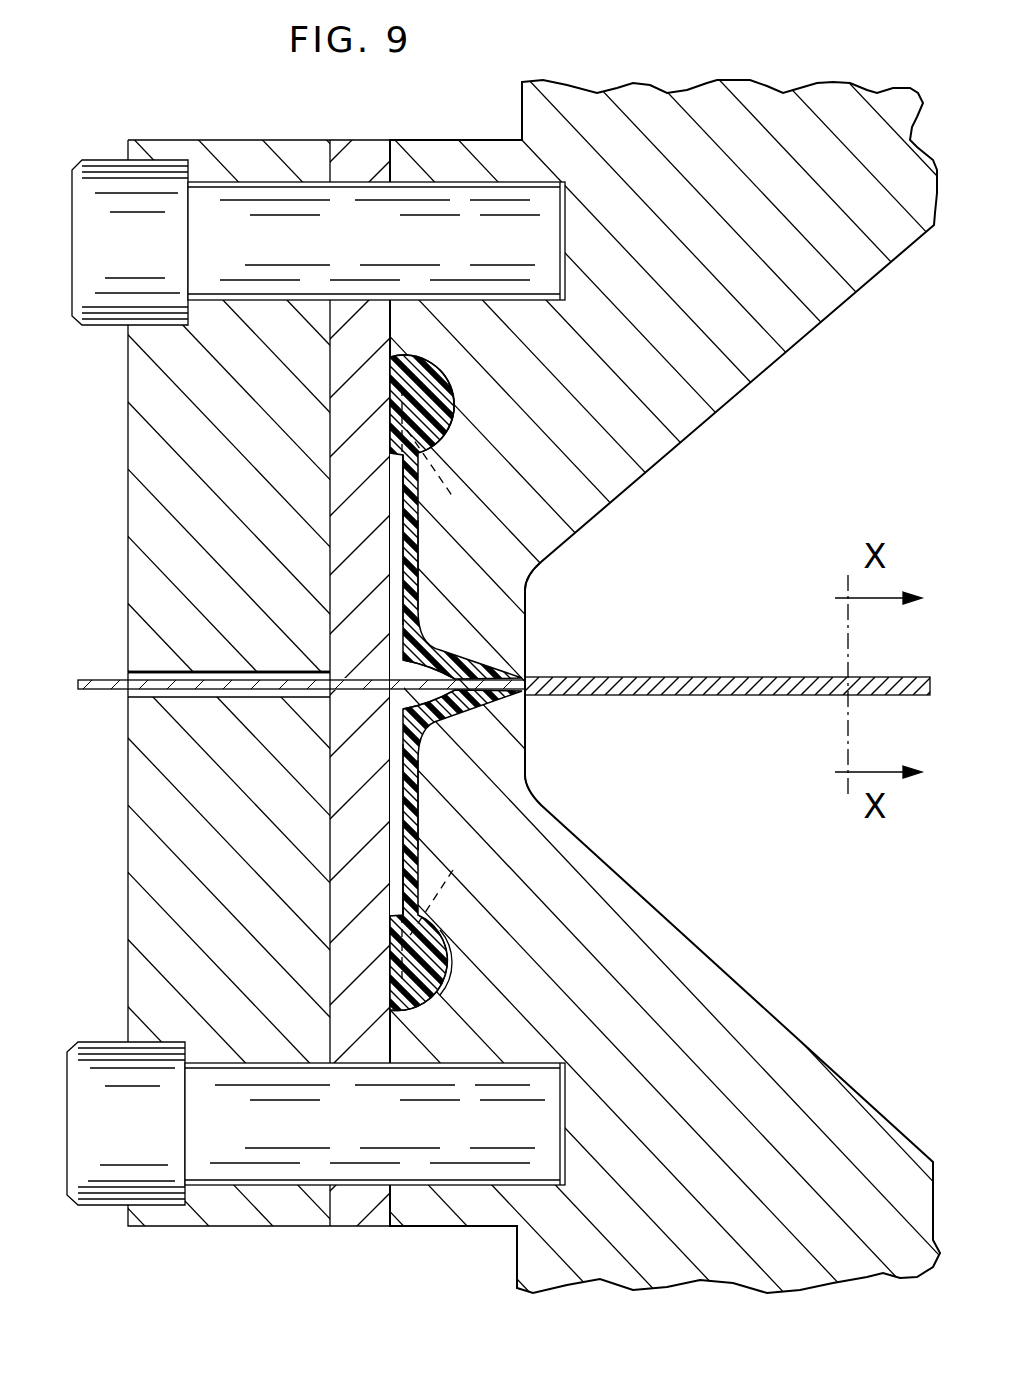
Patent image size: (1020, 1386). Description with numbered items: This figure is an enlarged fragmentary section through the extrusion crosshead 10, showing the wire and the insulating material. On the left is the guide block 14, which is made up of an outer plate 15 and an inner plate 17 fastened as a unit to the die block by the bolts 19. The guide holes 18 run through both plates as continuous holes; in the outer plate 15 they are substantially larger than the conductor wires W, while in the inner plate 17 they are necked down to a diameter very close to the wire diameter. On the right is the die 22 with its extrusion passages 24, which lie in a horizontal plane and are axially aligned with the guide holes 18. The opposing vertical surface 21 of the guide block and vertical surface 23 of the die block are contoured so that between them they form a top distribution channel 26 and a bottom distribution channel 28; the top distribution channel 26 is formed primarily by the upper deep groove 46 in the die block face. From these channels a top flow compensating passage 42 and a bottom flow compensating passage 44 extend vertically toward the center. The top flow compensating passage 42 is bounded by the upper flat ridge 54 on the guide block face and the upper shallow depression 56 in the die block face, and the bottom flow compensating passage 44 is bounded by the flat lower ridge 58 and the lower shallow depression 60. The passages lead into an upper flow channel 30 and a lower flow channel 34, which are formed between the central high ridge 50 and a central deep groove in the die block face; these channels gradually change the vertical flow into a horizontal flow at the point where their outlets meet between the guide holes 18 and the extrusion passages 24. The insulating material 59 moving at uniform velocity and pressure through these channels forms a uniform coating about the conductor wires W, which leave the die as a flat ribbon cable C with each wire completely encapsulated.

The extrusion crosshead 10 is at (172, 115).
The guide block 14 is at (510, 693).
The outer plate 15 is at (140, 525).
The inner plate 17 is at (356, 165).
The guide holes 18 is at (130, 676).
The bolts 19 is at (112, 180).
The vertical surface of guide block 21 is at (395, 175).
The die 22 is at (525, 655).
The vertical surface of die block 23 is at (390, 165).
The extrusion passages 24 is at (520, 700).
The top distribution channel 26 is at (445, 418).
The bottom distribution channel 28 is at (435, 970).
The upper flow channel 30 is at (510, 693).
The lower flow channel 34 is at (405, 722).
The top flow compensating passage 42 is at (405, 552).
The bottom flow compensating passage 44 is at (405, 832).
The upper deep groove 46 is at (440, 455).
The central high ridge 50 is at (440, 700).
The upper flat ridge 54 is at (420, 530).
The upper shallow depression 56 is at (415, 490).
The flat lower ridge 58 is at (410, 805).
The insulating material 59 is at (410, 592).
The lower shallow depression 60 is at (410, 880).
The conductor wires W is at (504, 680).
The flat ribbon cable C is at (735, 678).